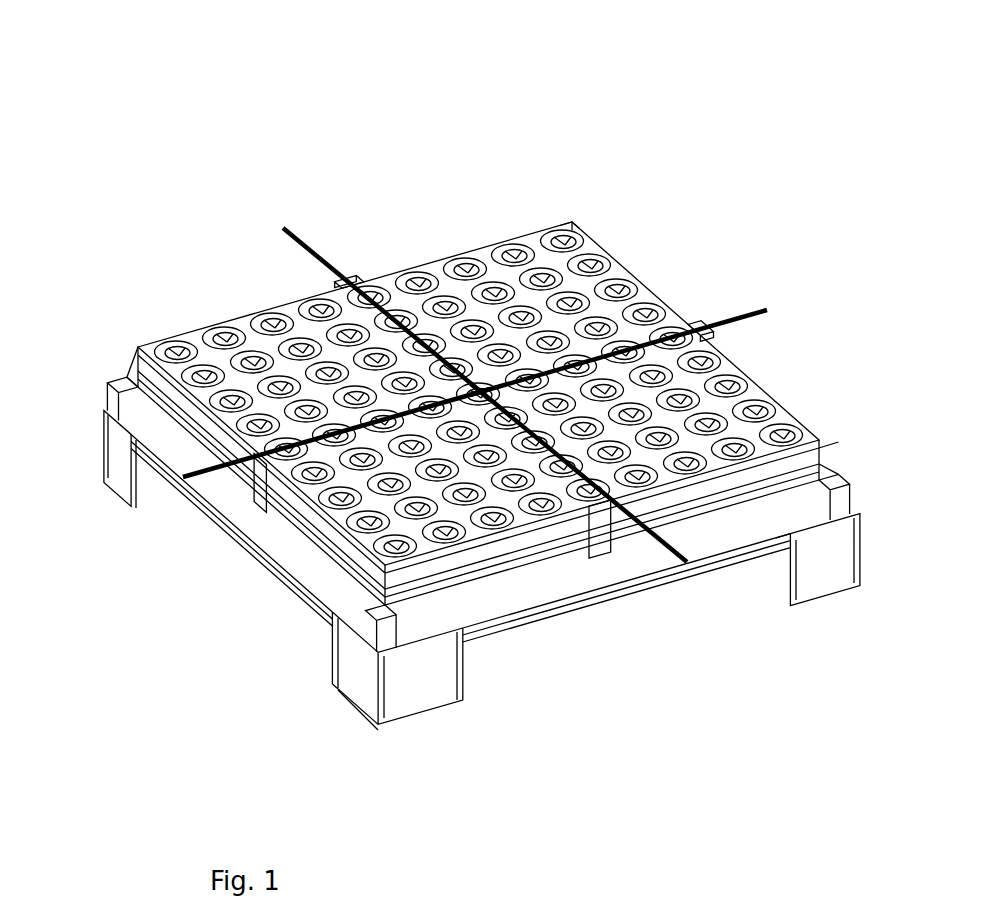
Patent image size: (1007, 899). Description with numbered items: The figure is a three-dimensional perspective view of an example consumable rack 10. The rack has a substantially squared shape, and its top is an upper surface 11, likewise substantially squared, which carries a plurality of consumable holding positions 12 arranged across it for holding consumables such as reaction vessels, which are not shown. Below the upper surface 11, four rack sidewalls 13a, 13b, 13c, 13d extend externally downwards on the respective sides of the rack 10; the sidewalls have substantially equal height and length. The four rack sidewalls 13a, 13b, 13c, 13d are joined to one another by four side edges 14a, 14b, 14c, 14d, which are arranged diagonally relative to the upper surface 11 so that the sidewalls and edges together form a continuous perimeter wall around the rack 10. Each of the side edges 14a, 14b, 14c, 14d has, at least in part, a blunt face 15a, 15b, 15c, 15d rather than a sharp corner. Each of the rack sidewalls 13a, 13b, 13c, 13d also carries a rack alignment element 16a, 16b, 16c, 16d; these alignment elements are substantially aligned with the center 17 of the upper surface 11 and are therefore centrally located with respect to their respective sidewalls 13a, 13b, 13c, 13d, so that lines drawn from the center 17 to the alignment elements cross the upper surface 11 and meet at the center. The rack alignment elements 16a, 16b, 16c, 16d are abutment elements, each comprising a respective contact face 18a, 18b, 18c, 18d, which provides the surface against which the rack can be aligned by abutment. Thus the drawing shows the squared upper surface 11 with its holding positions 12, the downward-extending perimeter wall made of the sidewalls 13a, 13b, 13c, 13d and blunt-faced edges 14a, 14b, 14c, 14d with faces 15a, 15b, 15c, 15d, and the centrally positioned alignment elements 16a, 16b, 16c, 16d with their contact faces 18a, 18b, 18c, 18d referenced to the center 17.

The consumable rack 10 is at (354, 122).
The upper surface 11 is at (613, 272).
The consumable holding positions 12 is at (224, 346).
The rack sidewall 13a is at (313, 573).
The rack sidewall 13b is at (493, 597).
The rack sidewall 13c is at (843, 463).
The rack sidewall 13d is at (142, 340).
The side edge 14a is at (382, 697).
The side edge 14b is at (851, 582).
The side edge 14c is at (575, 222).
The side edge 14d is at (98, 460).
The blunt face 15a is at (382, 647).
The blunt face 15b is at (855, 517).
The blunt face 15c is at (622, 174).
The blunt face 15d is at (132, 378).
The rack alignment element 16a is at (243, 487).
The rack alignment element 16b is at (620, 537).
The rack alignment element 16c is at (771, 311).
The rack alignment element 16d is at (350, 282).
The center 17 is at (483, 385).
The contact face 18a is at (187, 477).
The contact face 18b is at (603, 575).
The contact face 18c is at (720, 310).
The contact face 18d is at (375, 280).